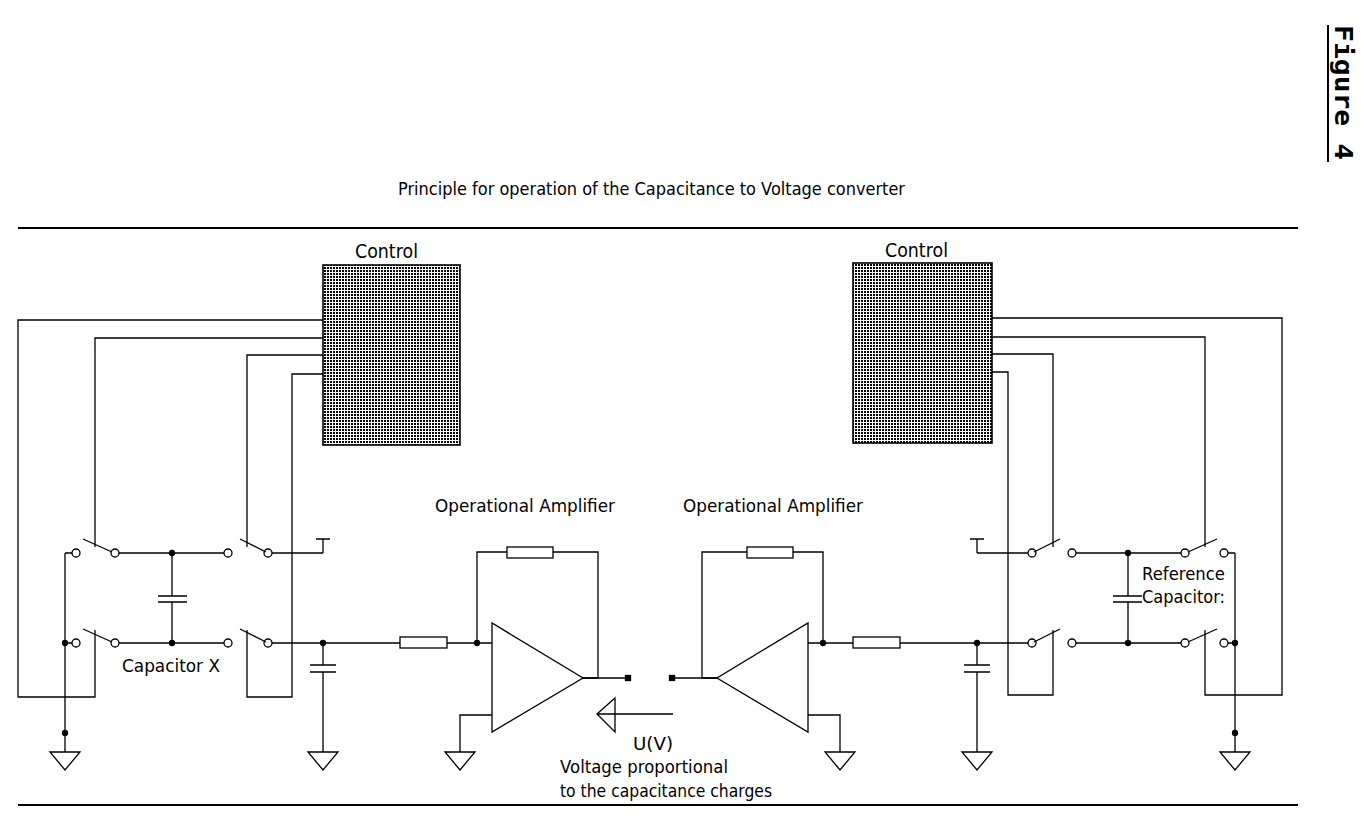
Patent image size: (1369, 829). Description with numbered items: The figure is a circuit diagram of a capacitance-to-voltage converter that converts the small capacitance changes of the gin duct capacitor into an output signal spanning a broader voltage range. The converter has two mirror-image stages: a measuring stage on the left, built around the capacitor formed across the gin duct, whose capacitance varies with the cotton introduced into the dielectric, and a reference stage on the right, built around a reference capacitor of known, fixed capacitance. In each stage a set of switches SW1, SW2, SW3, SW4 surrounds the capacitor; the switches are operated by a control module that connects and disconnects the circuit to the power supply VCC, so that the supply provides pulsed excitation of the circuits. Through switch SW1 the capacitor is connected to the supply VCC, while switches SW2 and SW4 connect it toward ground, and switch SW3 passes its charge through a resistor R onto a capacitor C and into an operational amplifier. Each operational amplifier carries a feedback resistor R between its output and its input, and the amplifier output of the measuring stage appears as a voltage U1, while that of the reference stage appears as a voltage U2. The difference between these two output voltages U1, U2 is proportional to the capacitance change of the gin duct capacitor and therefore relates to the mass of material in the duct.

The switch 1 (VCC charging switch) SW1 is at (650, 538).
The switch 2 (capacitor grounding switch) SW2 is at (650, 538).
The switch 3 (capacitor to amplifier switch) SW3 is at (650, 628).
The switch 4 (capacitor grounding switch) SW4 is at (650, 627).
The resistor R is at (650, 612).
The capacitor C is at (650, 706).
The supply voltage VCC is at (652, 534).
The output voltage of first operational amplifier U1 is at (607, 662).
The output voltage of second operational amplifier U2 is at (687, 662).